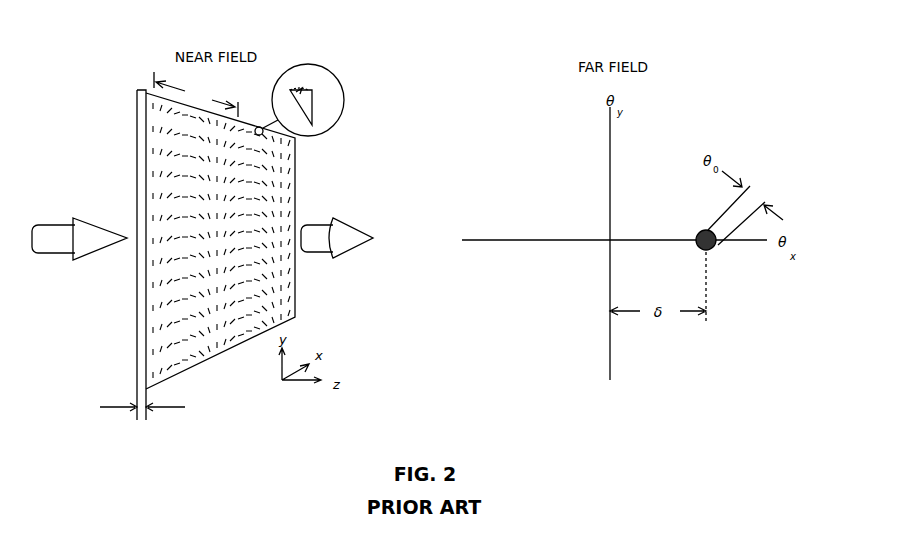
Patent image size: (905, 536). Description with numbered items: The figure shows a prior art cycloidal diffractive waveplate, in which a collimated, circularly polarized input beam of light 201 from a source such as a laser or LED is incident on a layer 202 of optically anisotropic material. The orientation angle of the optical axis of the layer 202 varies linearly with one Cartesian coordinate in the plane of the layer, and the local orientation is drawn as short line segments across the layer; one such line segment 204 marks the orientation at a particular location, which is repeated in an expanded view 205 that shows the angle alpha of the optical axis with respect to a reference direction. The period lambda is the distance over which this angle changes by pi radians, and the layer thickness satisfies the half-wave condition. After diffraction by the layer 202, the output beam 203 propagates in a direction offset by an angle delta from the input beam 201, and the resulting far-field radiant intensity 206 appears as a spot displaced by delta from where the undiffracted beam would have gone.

The input beam of light 201 is at (63, 273).
The layer of optically anisotropic material 202 is at (218, 352).
The output beam of light 203 is at (345, 283).
The line segment 204 is at (259, 127).
The expanded view 205 is at (332, 128).
The far-field radiant intensity 206 is at (690, 224).